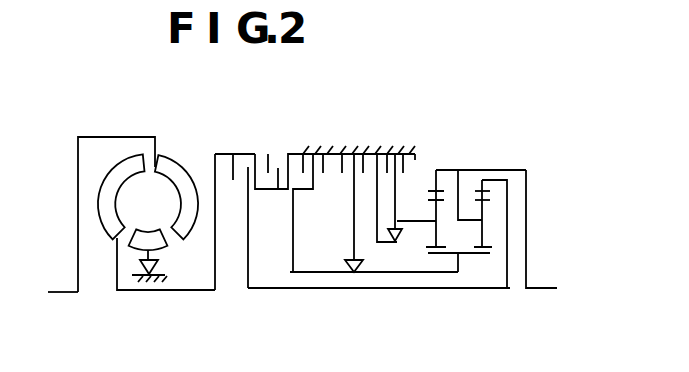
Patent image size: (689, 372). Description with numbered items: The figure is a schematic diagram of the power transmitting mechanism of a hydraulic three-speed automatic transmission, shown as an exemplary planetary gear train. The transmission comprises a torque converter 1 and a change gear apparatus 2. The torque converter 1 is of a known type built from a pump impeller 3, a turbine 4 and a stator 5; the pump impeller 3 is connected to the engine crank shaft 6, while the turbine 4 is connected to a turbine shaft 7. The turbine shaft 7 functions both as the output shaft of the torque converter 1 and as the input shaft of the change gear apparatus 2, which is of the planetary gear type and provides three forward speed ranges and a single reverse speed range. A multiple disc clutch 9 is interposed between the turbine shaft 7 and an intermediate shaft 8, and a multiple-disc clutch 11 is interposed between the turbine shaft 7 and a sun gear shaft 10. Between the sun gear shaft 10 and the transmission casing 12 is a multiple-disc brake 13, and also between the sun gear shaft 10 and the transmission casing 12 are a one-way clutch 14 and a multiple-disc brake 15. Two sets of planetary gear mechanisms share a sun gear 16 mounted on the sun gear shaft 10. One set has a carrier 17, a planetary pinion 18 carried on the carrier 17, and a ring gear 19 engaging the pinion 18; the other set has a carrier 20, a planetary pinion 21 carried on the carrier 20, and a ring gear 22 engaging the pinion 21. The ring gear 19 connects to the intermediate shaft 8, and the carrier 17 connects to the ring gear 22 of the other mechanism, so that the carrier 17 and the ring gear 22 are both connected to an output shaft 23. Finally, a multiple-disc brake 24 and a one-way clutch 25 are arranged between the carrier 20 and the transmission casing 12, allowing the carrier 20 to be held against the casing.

The torque converter 1 is at (145, 127).
The change gear apparatus 2 is at (355, 135).
The pump impeller 3 is at (175, 167).
The turbine 4 is at (118, 170).
The stator 5 is at (160, 246).
The engine crank shaft 6 is at (78, 293).
The turbine shaft 7 is at (187, 293).
The intermediate shaft 8 is at (351, 290).
The multiple disc clutch 9 is at (252, 152).
The sun gear shaft 10 is at (315, 270).
The multiple-disc clutch 11 is at (286, 152).
The transmission casing 12 is at (416, 153).
The multiple-disc brake 13 is at (318, 152).
The one-way clutch 14 is at (349, 232).
The multiple-disc brake 15 is at (370, 152).
The sun gear 16 is at (480, 258).
The carrier 17 is at (459, 192).
The planetary pinion 18 is at (488, 200).
The ring gear 19 is at (486, 191).
The carrier 20 is at (397, 214).
The planetary pinion 21 is at (442, 205).
The ring gear 22 is at (441, 190).
The output shaft 23 is at (540, 290).
The multiple-disc brake 24 is at (400, 152).
The one-way clutch 25 is at (404, 250).